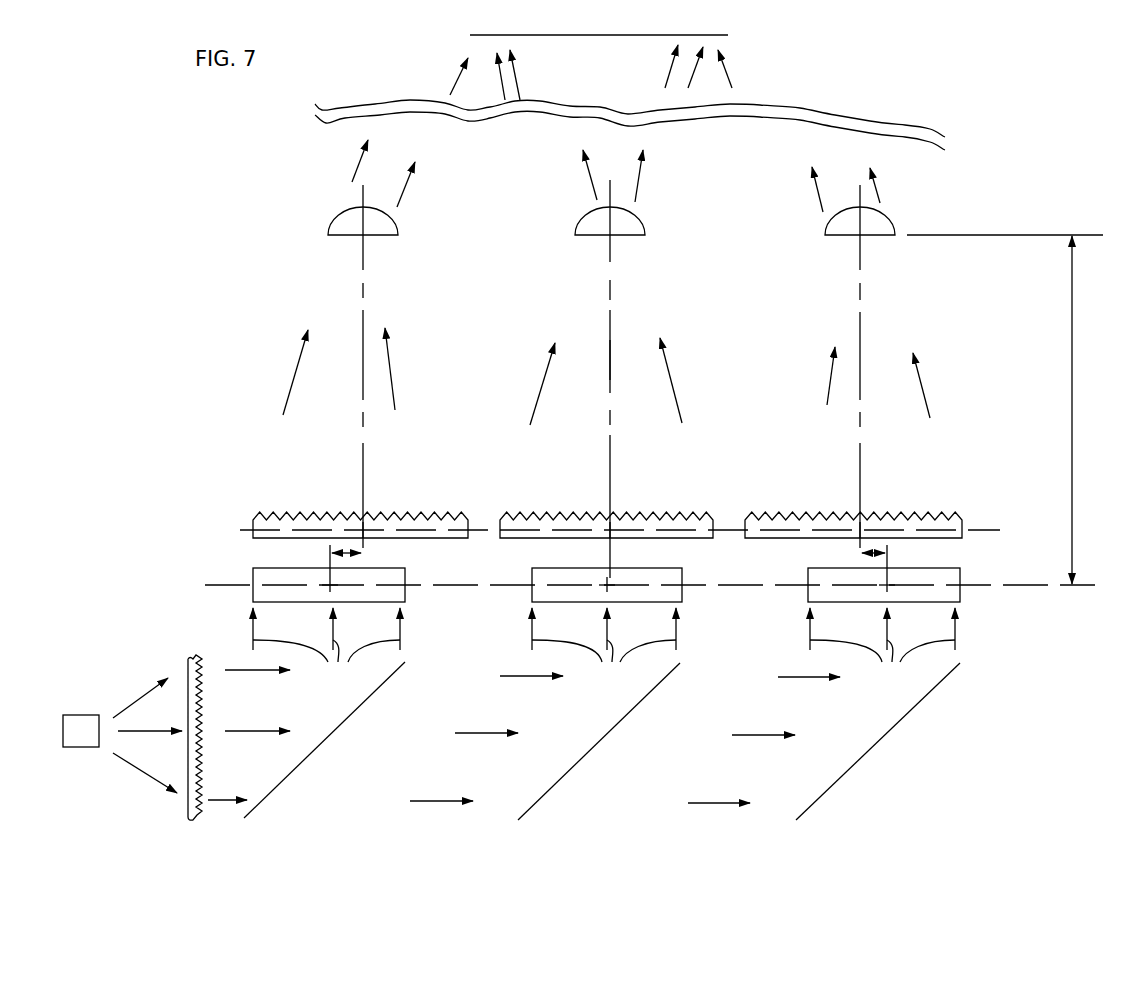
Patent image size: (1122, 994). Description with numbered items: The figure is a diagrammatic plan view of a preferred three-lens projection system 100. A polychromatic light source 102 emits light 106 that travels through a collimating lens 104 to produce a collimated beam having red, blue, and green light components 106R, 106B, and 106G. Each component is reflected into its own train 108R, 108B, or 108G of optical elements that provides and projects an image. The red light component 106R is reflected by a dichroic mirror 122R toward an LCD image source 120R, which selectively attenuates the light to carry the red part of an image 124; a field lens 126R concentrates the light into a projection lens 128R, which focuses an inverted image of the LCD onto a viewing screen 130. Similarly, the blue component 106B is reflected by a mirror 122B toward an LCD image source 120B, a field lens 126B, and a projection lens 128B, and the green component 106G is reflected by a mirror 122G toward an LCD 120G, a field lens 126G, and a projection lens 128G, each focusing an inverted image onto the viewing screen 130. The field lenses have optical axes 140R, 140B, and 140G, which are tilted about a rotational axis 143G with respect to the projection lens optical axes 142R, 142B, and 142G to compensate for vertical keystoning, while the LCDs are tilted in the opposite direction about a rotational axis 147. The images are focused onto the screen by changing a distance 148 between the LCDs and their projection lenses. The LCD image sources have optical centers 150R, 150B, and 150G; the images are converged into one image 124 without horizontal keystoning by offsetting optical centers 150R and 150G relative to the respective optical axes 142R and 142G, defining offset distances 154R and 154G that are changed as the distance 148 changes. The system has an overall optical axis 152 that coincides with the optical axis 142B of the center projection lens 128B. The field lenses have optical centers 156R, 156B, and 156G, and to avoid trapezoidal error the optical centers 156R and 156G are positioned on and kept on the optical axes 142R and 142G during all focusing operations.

The three-lens projection system 100 is at (183, 450).
The polychromatic light source 102 is at (80, 715).
The collimating lens 104 is at (190, 817).
The light 106 is at (108, 785).
The red light component 106R is at (304, 704).
The blue light component 106B is at (543, 704).
The green light component 106G is at (821, 705).
The red optical element train 108R is at (325, 218).
The blue optical element train 108B is at (568, 218).
The green optical element train 108G is at (806, 232).
The red LCD image source 120R is at (405, 582).
The blue LCD image source 120B is at (683, 582).
The green LCD image source 120G is at (962, 585).
The red dichroic mirror 122R is at (265, 800).
The blue mirror 122B is at (543, 800).
The green mirror 122G is at (830, 800).
The image 124 is at (493, 35).
The red field lens 126R is at (455, 513).
The blue field lens 126B is at (702, 512).
The green field lens 126G is at (945, 515).
The red projection lens 128R is at (380, 236).
The center projection lens 128B is at (625, 236).
The green projection lens 128G is at (875, 236).
The viewing screen 130 is at (705, 35).
The red field lens optical axis 140R is at (363, 465).
The blue field lens optical axis 140B is at (610, 472).
The green field lens optical axis 140G is at (860, 468).
The red projection lens optical axis 142R is at (363, 325).
The blue projection lens optical axis 142B is at (610, 318).
The green projection lens optical axis 142G is at (860, 330).
The rotational axis 143G is at (972, 531).
The rotational axis 147 is at (218, 587).
The distance 148 is at (1068, 345).
The optical center of red LCD 150R is at (328, 582).
The optical center of blue LCD 150B is at (605, 582).
The optical center of green LCD 150G is at (887, 588).
The overall optical axis 152 is at (610, 360).
The red offset distance 154R is at (362, 556).
The green offset distance 154G is at (858, 556).
The optical center of red field lens 156R is at (363, 530).
The optical center of blue field lens 156B is at (610, 530).
The optical center of green field lens 156G is at (860, 530).